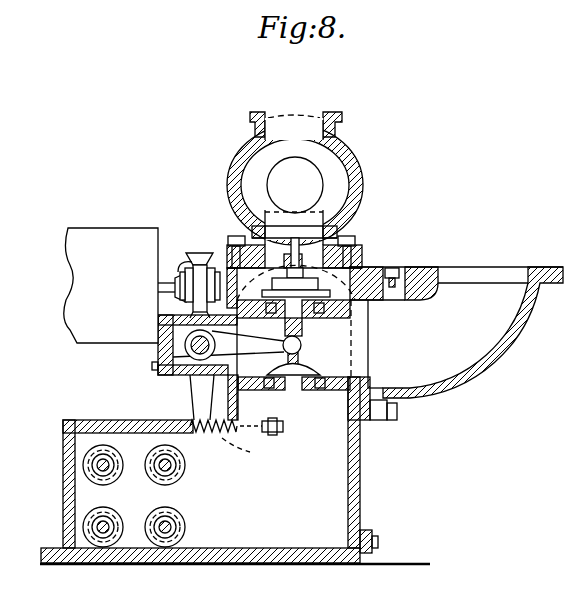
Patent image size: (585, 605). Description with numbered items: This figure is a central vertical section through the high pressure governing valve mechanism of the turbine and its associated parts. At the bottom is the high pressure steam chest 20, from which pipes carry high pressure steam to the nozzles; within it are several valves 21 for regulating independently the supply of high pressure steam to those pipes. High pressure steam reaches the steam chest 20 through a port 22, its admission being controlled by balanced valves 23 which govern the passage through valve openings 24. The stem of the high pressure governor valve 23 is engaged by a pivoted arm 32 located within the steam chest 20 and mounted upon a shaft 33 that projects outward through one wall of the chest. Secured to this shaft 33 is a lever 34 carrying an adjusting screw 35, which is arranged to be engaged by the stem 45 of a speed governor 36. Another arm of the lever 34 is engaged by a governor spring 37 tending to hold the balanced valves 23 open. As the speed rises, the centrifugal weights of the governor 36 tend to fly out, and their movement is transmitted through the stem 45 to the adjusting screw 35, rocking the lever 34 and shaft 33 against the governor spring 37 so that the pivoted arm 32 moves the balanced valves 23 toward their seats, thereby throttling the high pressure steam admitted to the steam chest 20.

The high pressure steam chest 20 is at (318, 496).
The valves 21 is at (157, 513).
The port 22 is at (357, 338).
The balanced valves 23 is at (335, 290).
The valve openings 24 is at (277, 306).
The pivoted arm 32 is at (250, 347).
The shaft 33 is at (160, 357).
The lever 34 is at (200, 270).
The adjusting screw 35 is at (185, 297).
The speed governor 36 is at (108, 228).
The governor spring 37 is at (240, 436).
The stem 45 is at (165, 275).